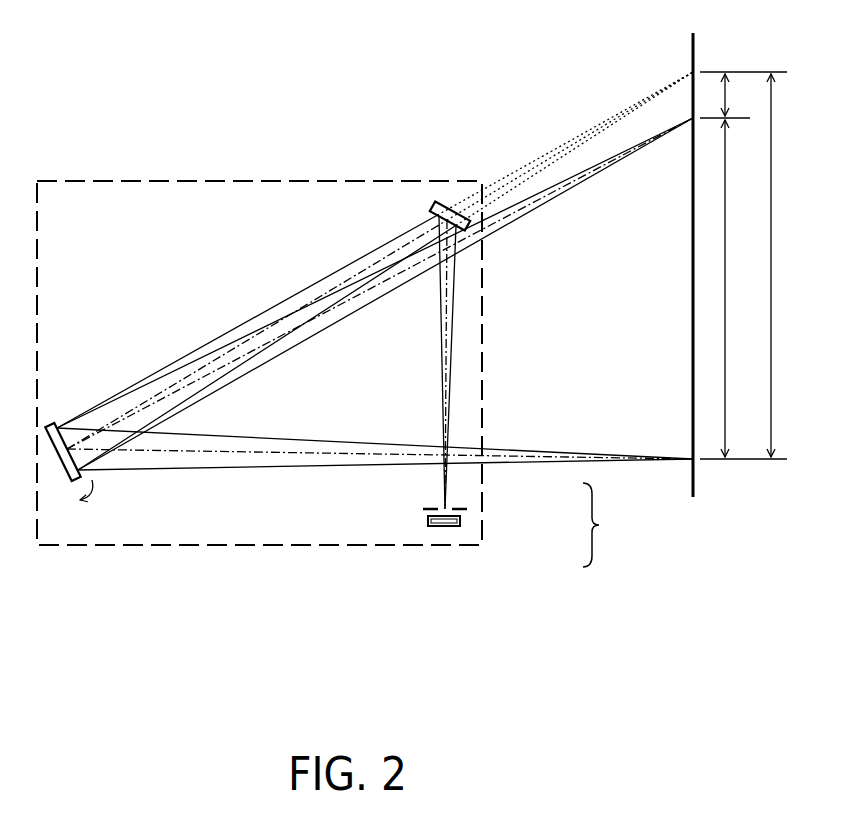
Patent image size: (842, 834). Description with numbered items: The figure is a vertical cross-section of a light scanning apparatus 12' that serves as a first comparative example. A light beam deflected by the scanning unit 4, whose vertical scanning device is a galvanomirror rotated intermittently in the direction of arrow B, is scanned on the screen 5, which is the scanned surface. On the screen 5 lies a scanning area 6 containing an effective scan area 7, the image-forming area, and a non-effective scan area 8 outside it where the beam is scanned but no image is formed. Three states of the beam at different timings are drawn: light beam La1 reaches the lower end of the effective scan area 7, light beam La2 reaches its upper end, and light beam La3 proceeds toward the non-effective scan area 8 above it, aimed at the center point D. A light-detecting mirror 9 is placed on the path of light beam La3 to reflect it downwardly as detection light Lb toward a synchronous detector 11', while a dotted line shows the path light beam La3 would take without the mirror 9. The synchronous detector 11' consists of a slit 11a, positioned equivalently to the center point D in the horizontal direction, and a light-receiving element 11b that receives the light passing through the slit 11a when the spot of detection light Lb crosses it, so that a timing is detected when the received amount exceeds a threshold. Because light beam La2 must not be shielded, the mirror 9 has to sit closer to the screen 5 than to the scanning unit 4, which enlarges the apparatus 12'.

The scanning unit 4 is at (53, 412).
The arrow B is at (70, 496).
The screen 5 is at (681, 342).
The scanning area 6 is at (778, 265).
The effective scan area 7 is at (734, 288).
The non-effective scan area 8 is at (735, 95).
The light-detecting mirror 9 is at (451, 195).
The slit 11a is at (480, 511).
The light-receiving element 11b is at (468, 526).
The synchronous detector 11' is at (608, 525).
The light scanning apparatus 12' is at (259, 310).
The light beam La1 is at (278, 442).
The light beam La2 is at (318, 333).
The light beam La3 is at (316, 292).
The detection light Lb is at (462, 326).
The center point D is at (689, 70).